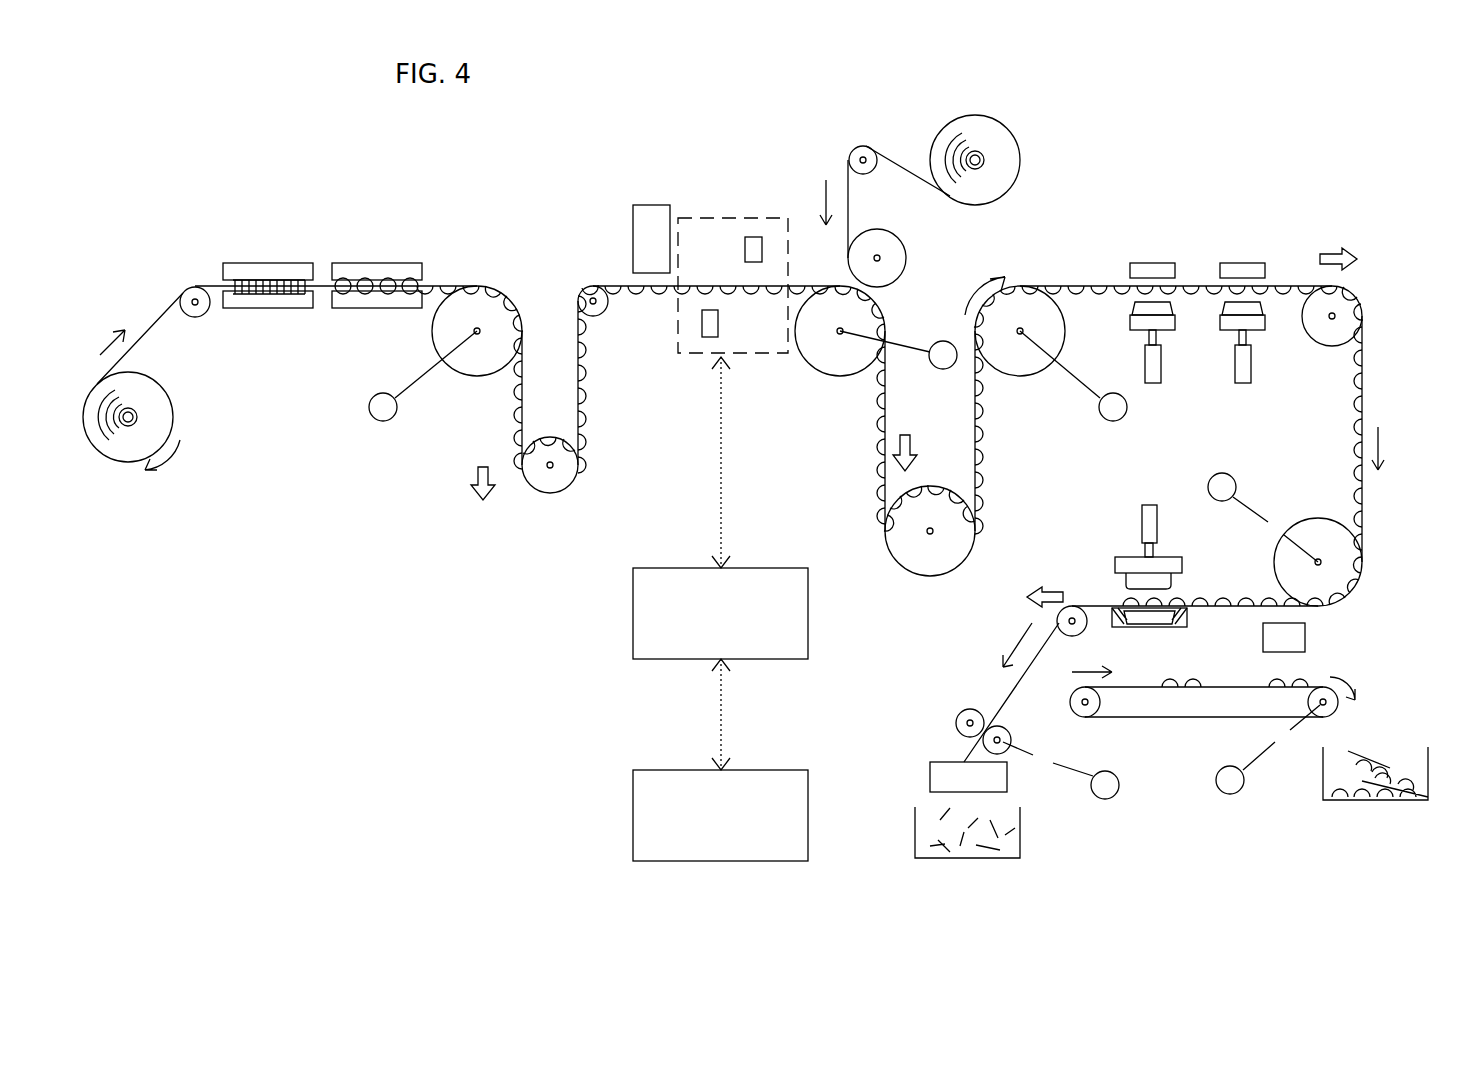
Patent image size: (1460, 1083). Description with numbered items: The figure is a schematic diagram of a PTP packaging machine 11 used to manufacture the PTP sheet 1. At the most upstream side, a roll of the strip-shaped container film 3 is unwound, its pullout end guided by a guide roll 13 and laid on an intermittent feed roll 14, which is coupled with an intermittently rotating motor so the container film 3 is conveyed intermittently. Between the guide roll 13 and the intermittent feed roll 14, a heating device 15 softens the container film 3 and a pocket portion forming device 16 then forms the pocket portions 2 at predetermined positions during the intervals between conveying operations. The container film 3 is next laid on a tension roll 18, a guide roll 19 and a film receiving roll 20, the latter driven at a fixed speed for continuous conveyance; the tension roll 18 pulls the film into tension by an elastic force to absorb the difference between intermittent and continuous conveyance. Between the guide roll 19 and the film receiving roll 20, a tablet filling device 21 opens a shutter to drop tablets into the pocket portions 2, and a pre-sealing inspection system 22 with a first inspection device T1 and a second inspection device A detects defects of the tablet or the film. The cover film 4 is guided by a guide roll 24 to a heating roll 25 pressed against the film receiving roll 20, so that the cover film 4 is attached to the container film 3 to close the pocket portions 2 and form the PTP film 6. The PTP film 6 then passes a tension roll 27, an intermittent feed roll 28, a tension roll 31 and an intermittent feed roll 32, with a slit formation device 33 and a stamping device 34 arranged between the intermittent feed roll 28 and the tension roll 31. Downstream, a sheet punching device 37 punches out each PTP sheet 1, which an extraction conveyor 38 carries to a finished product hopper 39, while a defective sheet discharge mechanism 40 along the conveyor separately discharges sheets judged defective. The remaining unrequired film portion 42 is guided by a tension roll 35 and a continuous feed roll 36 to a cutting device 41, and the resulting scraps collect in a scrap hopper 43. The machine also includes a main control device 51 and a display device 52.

The PTP sheet 1 is at (1330, 674).
The pocket portions 2 is at (418, 298).
The container film 3 is at (153, 322).
The cover film 4 is at (897, 153).
The PTP film 6 is at (888, 368).
The PTP packaging machine 11 is at (1329, 156).
The guide roll 13 is at (195, 318).
The intermittent feed roll 14 is at (475, 376).
The heating device 15 is at (270, 262).
The pocket portion forming device 16 is at (375, 262).
The tension roll 18 is at (545, 436).
The guide roll 19 is at (607, 306).
The film receiving roll 20 is at (890, 318).
The tablet filling device 21 is at (633, 228).
The pre-sealing inspection system 22 is at (690, 218).
The guide roll 24 is at (875, 170).
The heating roll 25 is at (906, 263).
The tension roll 27 is at (930, 577).
The intermittent feed roll 28 is at (1026, 292).
The tension roll 31 is at (1352, 292).
The intermittent feed roll 32 is at (1360, 548).
The slit formation device 33 is at (1175, 387).
The stamping device 34 is at (1268, 390).
The tension roll 35 is at (1070, 636).
The continuous feed roll 36 is at (1010, 741).
The sheet punching device 37 is at (1112, 528).
The extraction conveyor 38 is at (1337, 675).
The finished product hopper 39 is at (1323, 790).
The defective sheet discharge mechanism 40 is at (1305, 638).
The cutting device 41 is at (1007, 777).
The unrequired film portion 42 is at (1000, 690).
The scrap hopper 43 is at (1020, 833).
The main control device 51 is at (786, 568).
The display device 52 is at (786, 770).
The second inspection device A is at (755, 237).
The first inspection device T1 is at (702, 323).